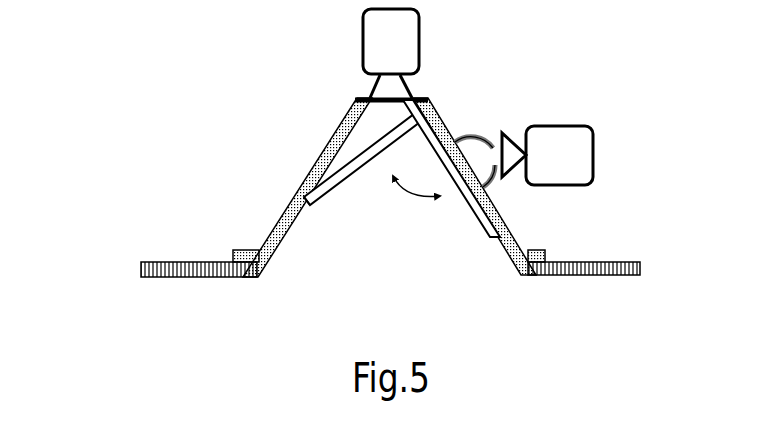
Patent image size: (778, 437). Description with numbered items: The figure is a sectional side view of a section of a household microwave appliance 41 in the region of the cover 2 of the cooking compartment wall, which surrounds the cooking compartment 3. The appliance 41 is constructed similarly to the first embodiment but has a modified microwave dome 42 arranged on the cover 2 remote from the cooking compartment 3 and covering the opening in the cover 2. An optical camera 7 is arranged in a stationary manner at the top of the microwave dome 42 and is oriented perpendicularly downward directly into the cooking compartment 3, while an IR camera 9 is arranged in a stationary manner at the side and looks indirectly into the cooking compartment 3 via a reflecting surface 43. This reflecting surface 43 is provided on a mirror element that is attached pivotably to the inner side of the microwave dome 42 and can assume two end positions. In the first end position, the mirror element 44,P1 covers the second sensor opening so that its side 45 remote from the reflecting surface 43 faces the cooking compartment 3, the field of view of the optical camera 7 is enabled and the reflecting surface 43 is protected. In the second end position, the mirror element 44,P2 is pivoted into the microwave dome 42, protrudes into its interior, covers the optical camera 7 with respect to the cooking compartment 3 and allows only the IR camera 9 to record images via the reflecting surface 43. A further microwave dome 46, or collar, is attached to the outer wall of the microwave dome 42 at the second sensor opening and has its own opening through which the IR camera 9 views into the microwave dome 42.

The household microwave appliance 41 is at (145, 75).
The microwave dome 42 is at (318, 153).
The cover 2 is at (165, 262).
The cooking compartment 3 is at (181, 316).
The optical camera 7 is at (362, 36).
The reflecting surface 43 is at (366, 170).
The side of the mirror element remote from the reflecting surface 45 is at (470, 202).
The mirror element in second end position 44,P2 is at (333, 200).
The mirror element in first end position 44,P1 is at (477, 217).
The further microwave dome 46 is at (483, 135).
The IR camera 9 is at (594, 153).